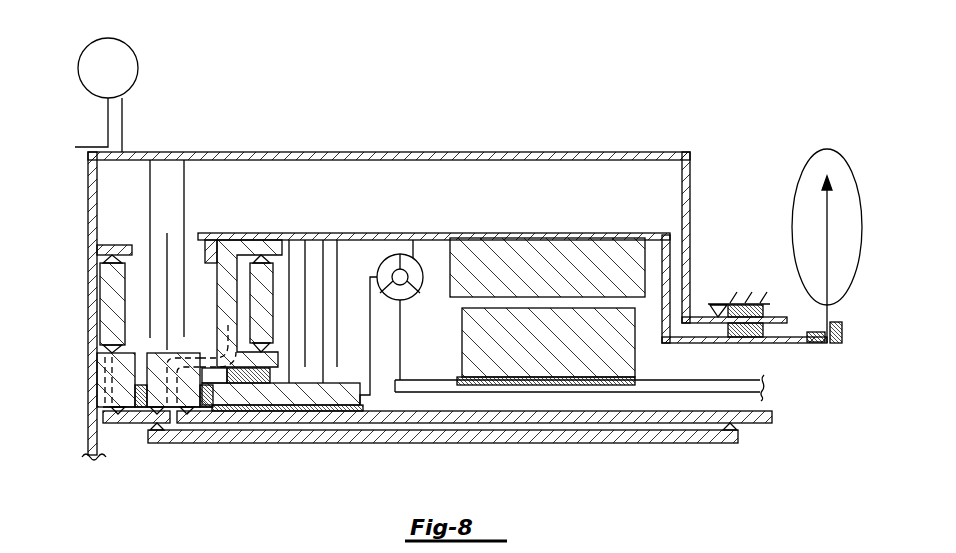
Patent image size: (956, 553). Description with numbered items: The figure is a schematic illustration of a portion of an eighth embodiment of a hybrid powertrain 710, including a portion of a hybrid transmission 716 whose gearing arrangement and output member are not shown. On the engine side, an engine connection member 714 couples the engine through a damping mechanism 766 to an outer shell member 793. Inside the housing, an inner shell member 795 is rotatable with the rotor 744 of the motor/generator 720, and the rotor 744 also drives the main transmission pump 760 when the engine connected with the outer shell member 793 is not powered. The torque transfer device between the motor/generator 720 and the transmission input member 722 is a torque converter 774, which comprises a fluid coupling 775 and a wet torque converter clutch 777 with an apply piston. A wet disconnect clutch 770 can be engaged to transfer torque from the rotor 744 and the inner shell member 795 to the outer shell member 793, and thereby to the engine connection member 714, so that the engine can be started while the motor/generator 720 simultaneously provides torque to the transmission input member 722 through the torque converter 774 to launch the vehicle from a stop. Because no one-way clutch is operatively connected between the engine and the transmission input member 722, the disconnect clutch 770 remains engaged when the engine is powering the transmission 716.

The hybrid powertrain 710 is at (556, 105).
The engine connection member 714 is at (84, 147).
The hybrid transmission 716 is at (374, 129).
The motor/generator 720 is at (598, 214).
The transmission input member 722 is at (768, 398).
The rotor 744 is at (556, 257).
The main transmission pump 760 is at (847, 158).
The damping mechanism 766 is at (127, 44).
The wet disconnect clutch 770 is at (196, 184).
The torque converter 774 is at (362, 234).
The fluid coupling 775 is at (427, 258).
The wet torque converter clutch 777 is at (313, 234).
The outer shell member 793 is at (257, 152).
The inner shell member 795 is at (518, 233).